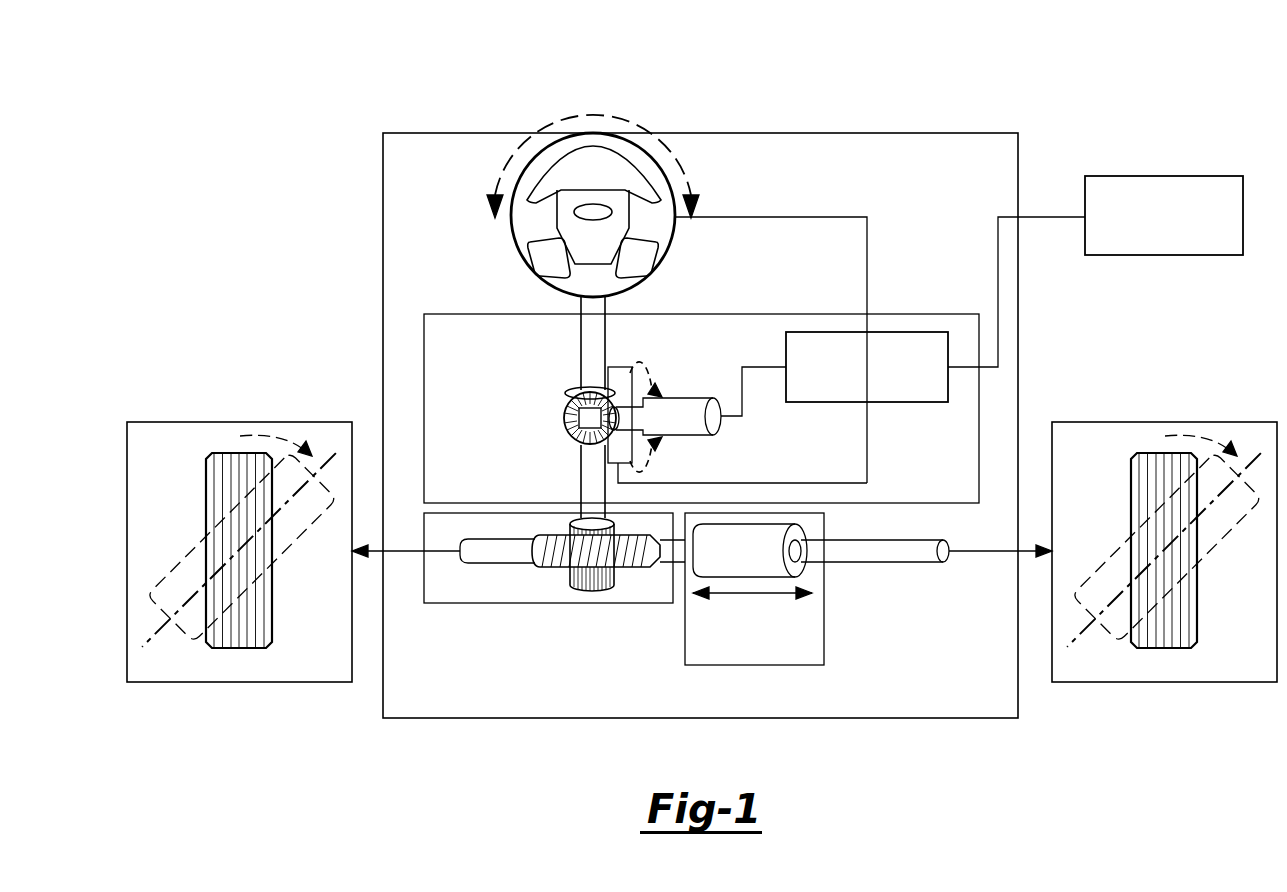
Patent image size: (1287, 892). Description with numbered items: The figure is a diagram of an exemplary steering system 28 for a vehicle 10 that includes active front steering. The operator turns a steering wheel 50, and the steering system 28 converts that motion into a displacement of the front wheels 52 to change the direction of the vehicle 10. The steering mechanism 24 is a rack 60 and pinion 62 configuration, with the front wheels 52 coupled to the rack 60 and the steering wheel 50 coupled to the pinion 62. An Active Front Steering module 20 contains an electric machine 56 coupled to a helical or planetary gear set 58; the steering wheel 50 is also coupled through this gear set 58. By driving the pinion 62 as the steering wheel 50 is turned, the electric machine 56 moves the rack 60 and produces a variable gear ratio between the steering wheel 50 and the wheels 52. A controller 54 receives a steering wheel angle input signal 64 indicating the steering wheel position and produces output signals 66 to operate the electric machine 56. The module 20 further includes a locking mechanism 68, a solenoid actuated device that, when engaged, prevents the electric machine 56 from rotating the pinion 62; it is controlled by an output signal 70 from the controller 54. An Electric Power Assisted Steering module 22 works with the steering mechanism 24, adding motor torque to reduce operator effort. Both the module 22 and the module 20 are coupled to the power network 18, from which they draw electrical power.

The vehicle 10 is at (413, 66).
The power network 18 is at (1195, 255).
The Active Front Steering (AFS) module 20 is at (979, 400).
The Electric Power Assisted Steering (EPAS) module 22 is at (824, 632).
The steering mechanism 24 is at (448, 603).
The steering system 28 is at (932, 133).
The steering wheel 50 is at (513, 256).
The front wheels 52 is at (237, 682).
The controller 54 is at (922, 332).
The electric machine 56 is at (691, 398).
The gear set 58 is at (565, 430).
The rack 60 is at (498, 563).
The pinion 62 is at (592, 590).
The steering wheel angle input signal 64 is at (822, 217).
The output signals 66 is at (743, 408).
The locking mechanism 68 is at (620, 367).
The output signal 70 is at (868, 461).